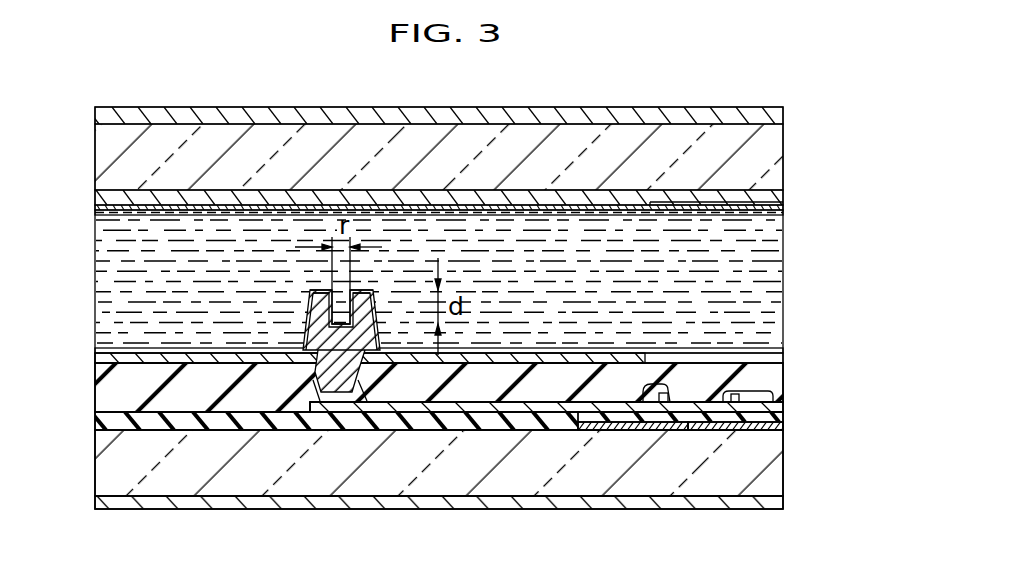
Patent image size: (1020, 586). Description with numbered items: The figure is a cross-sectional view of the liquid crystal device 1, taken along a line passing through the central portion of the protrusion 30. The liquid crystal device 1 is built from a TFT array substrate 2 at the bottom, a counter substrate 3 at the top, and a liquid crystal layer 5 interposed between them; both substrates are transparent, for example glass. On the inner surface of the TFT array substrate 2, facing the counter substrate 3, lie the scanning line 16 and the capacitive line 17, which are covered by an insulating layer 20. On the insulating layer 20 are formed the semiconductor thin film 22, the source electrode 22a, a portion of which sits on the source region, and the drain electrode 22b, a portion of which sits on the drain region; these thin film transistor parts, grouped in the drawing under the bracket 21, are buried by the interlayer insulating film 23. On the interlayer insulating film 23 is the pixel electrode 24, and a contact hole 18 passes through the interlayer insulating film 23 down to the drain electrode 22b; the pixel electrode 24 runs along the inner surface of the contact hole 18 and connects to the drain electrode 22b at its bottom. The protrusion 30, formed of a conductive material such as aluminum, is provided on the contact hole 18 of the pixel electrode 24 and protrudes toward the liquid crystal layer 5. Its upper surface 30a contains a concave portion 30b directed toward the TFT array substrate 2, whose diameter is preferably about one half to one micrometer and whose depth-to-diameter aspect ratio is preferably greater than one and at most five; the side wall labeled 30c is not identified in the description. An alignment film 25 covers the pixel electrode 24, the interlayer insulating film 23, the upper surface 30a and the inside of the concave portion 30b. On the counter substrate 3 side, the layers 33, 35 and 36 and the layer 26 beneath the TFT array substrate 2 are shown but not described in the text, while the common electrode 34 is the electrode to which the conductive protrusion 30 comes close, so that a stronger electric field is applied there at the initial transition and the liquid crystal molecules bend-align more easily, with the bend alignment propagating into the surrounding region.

The liquid crystal device 1 is at (652, 62).
The TFT array substrate 2 is at (785, 463).
The counter substrate 3 is at (773, 153).
The liquid crystal layer 5 is at (783, 275).
The scanning line 16 is at (717, 430).
The capacitive line 17 is at (603, 430).
The contact hole 18 is at (300, 402).
The insulating layer 20 is at (95, 417).
The pixel electrode structure 21 is at (745, 391).
The semiconductor thin film 22 is at (775, 393).
The source electrode 22a is at (783, 424).
The drain electrode 22b is at (672, 384).
The interlayer insulating film 23 is at (110, 400).
The pixel electrode 24 is at (95, 360).
The alignment film 25 is at (783, 355).
The polarizing plate 26 is at (785, 498).
The protrusion 30 is at (349, 398).
The upper surface 30a is at (327, 288).
The concave portion 30b is at (342, 289).
The recess of spacer 30c is at (300, 314).
The color filter layer 33 is at (770, 197).
The common electrode 34 is at (787, 205).
The alignment film 35 is at (785, 213).
The polarizing plate 36 is at (785, 112).